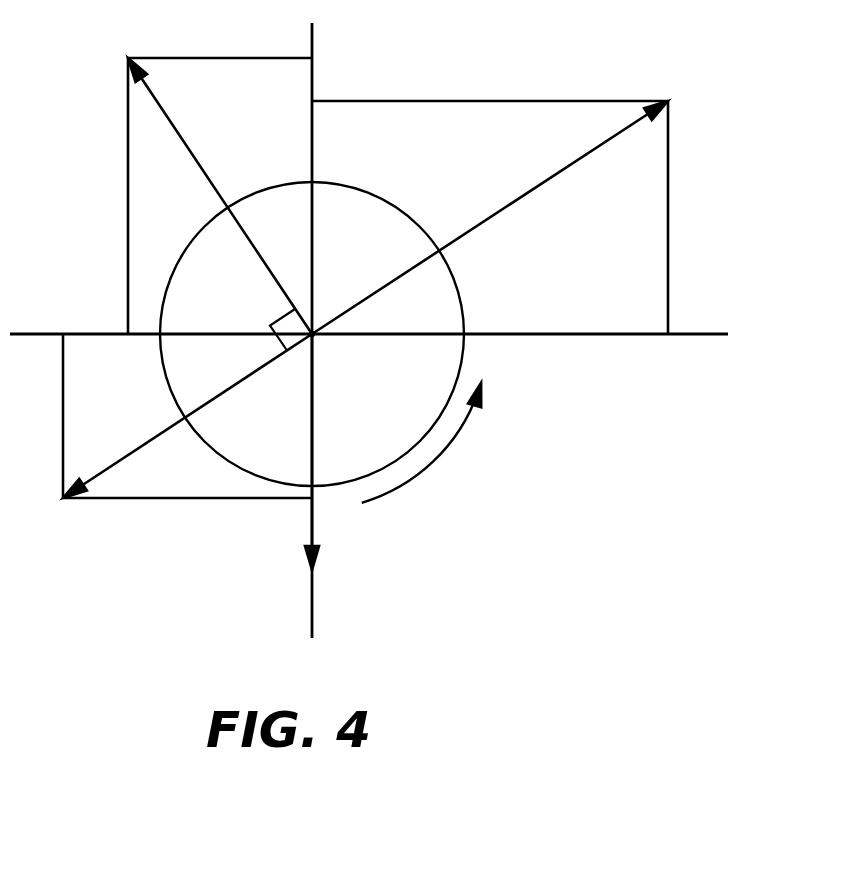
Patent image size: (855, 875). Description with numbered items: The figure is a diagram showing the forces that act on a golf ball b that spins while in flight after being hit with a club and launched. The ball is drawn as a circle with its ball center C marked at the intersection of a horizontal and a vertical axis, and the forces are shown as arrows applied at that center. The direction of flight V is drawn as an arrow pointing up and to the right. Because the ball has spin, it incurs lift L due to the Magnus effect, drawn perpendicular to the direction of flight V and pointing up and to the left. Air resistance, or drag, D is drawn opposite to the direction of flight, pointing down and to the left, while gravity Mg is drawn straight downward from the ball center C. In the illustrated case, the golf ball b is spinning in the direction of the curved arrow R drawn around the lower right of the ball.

The golf ball b is at (255, 440).
The ball center C is at (326, 351).
The lift L is at (208, 178).
The direction of flight V is at (504, 200).
The air resistance (drag) D is at (171, 434).
The gravity Mg is at (338, 474).
The spin direction arrow R is at (434, 424).